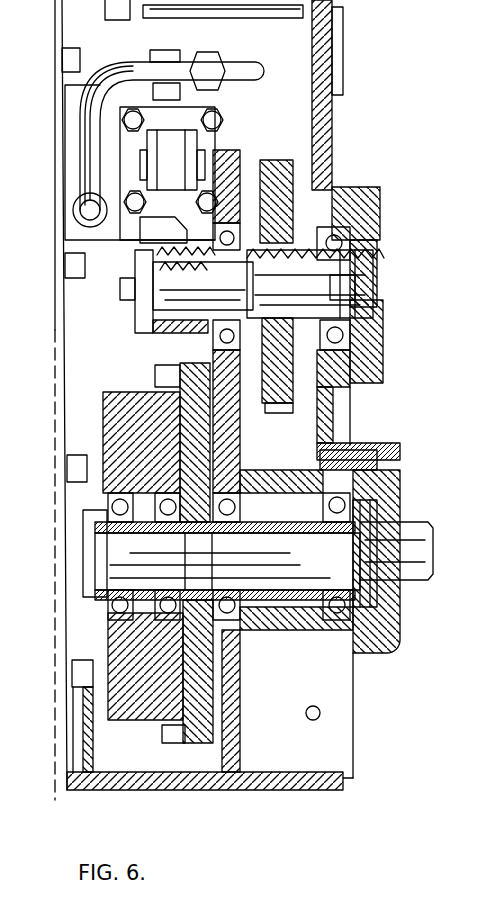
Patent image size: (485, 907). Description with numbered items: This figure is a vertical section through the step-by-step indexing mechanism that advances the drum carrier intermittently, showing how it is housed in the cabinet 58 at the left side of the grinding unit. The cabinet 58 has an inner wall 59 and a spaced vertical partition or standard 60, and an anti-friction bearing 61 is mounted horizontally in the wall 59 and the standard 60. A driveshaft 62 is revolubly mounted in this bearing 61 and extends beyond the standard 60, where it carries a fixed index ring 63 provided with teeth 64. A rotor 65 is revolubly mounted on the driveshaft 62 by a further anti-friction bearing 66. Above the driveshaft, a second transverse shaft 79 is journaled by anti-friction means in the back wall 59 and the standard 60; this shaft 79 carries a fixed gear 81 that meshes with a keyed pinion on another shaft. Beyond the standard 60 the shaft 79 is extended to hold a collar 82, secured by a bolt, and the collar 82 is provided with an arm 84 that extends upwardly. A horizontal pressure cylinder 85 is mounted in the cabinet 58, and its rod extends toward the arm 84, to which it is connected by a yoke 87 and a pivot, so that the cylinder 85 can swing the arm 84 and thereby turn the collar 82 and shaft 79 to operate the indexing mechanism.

The cabinet 58 is at (279, 789).
The inner wall 59 is at (333, 415).
The standard 60 is at (218, 462).
The anti-friction bearing 61 is at (345, 490).
The driveshaft 62 is at (410, 540).
The index ring 63 is at (187, 363).
The teeth 64 is at (155, 380).
The rotor 65 is at (125, 412).
The anti-friction bearing 66 is at (108, 608).
The second transverse shaft 79 is at (360, 288).
The gear 81 is at (290, 180).
The collar 82 is at (137, 313).
The arm 84 is at (173, 210).
The pressure cylinder 85 is at (213, 143).
The yoke 87 is at (155, 150).